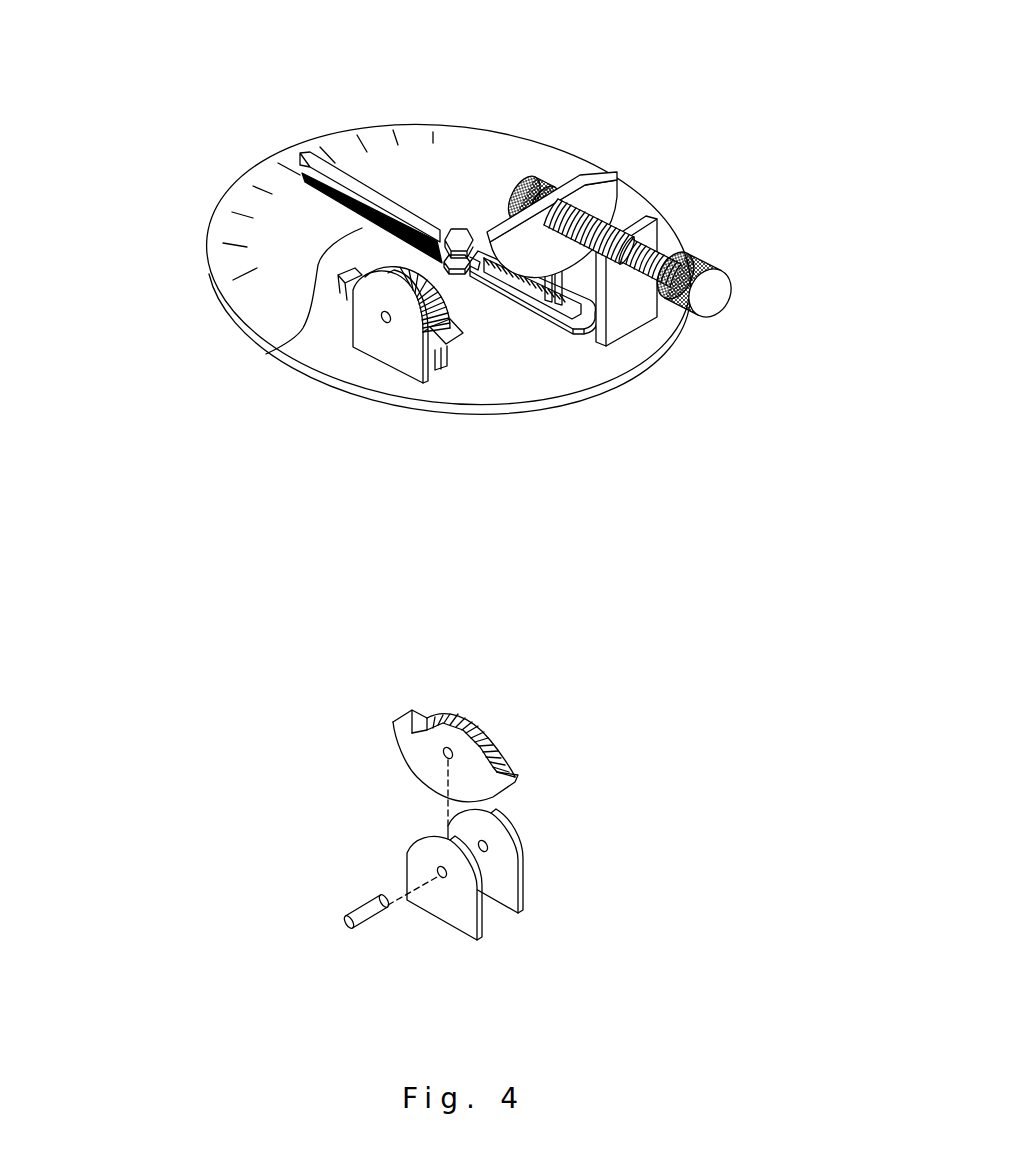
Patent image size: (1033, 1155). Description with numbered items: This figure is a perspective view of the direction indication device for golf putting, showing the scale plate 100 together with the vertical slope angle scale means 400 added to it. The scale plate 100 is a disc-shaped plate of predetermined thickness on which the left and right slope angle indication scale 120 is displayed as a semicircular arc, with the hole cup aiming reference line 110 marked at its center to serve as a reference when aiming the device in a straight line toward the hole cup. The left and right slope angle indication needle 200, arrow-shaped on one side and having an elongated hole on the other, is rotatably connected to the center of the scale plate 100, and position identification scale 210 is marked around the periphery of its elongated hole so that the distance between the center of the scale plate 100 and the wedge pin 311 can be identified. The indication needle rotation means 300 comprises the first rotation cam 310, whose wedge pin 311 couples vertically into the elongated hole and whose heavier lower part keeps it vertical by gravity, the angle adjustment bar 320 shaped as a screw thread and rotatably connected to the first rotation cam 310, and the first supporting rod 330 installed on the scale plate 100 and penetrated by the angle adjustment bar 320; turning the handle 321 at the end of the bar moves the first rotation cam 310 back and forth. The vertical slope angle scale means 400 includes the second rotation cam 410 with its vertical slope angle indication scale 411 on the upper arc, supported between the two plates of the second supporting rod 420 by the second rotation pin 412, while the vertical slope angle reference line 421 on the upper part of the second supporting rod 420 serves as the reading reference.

The scale plate 100 is at (240, 323).
The hole cup aiming reference line 110 is at (294, 280).
The left and right slope angle indication scale 120 is at (248, 190).
The left and right slope angle indication needle 200 is at (332, 176).
The position identification scale 210 is at (497, 262).
The indication needle rotation means 300 is at (650, 178).
The first rotation cam 310 is at (590, 178).
The wedge pin 311 is at (550, 293).
The angle adjustment bar 320 is at (534, 203).
The handle 321 is at (717, 285).
The first supporting rod 330 is at (627, 317).
The vertical slope angle scale means 400 is at (367, 430).
The second rotation cam 410 is at (438, 368).
The vertical slope angle indication scale 411 is at (373, 343).
The second rotation pin 412 is at (368, 925).
The second supporting rod 420 is at (412, 358).
The vertical slope angle reference line 421 is at (375, 276).